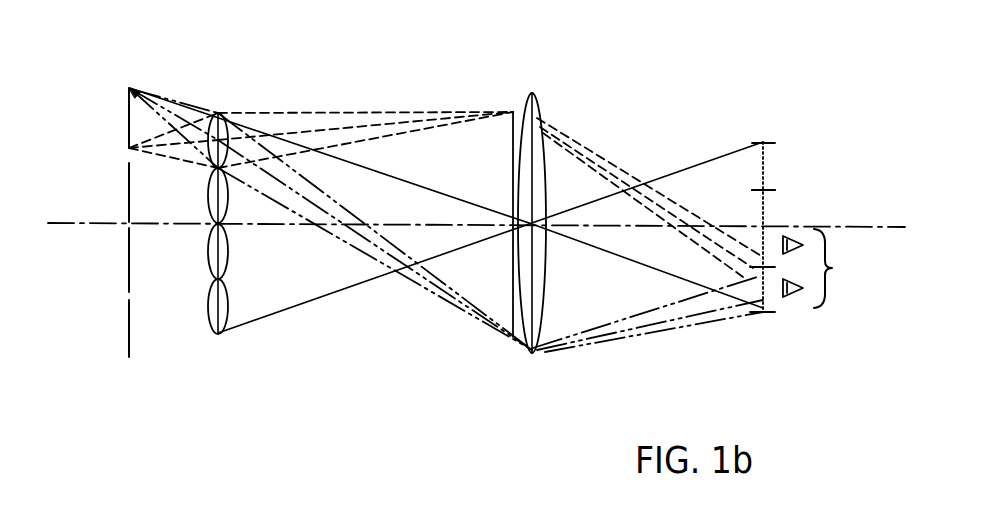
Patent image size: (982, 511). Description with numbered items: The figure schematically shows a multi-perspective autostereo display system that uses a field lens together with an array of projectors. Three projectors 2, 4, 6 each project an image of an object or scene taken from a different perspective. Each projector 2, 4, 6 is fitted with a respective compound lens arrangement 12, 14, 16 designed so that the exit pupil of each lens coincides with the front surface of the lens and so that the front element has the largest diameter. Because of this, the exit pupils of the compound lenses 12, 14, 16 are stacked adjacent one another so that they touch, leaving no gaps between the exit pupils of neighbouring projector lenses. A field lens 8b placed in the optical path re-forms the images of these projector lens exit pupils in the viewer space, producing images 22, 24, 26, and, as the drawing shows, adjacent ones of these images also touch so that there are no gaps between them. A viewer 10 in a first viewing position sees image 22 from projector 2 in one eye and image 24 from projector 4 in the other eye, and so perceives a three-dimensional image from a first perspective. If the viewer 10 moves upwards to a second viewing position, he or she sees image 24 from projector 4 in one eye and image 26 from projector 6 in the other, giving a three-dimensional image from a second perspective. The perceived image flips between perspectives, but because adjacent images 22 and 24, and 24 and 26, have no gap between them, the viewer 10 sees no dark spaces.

The projector 2 is at (129, 107).
The projector 4 is at (129, 180).
The projector 6 is at (129, 258).
The compound lens arrangement 12 is at (239, 195).
The compound lens arrangement 14 is at (227, 205).
The compound lens arrangement 16 is at (208, 253).
The field lens 8b is at (536, 108).
The image 24 is at (763, 247).
The image 26 is at (765, 207).
The image 22 is at (767, 298).
The viewer 10 is at (830, 268).